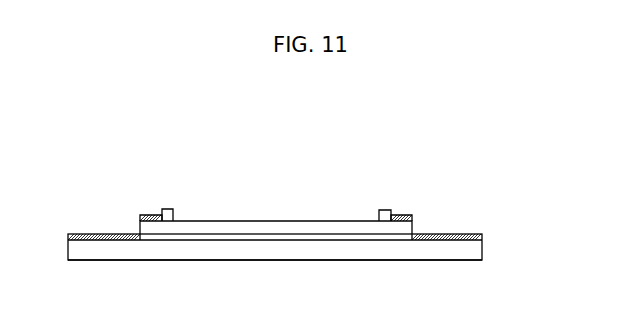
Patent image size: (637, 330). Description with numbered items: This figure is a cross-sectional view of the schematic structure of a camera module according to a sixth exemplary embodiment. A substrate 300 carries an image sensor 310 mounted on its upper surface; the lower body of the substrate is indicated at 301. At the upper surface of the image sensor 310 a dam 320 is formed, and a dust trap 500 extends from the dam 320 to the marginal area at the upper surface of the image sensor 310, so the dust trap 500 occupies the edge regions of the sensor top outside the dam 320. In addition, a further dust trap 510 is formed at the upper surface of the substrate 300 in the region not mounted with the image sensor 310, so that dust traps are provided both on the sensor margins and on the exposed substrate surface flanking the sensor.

The substrate 300 is at (480, 250).
The substrate body 301 is at (455, 240).
The dust trap 510 is at (482, 236).
The image sensor 310 is at (412, 219).
The dust trap 500 is at (407, 214).
The dam 320 is at (383, 210).